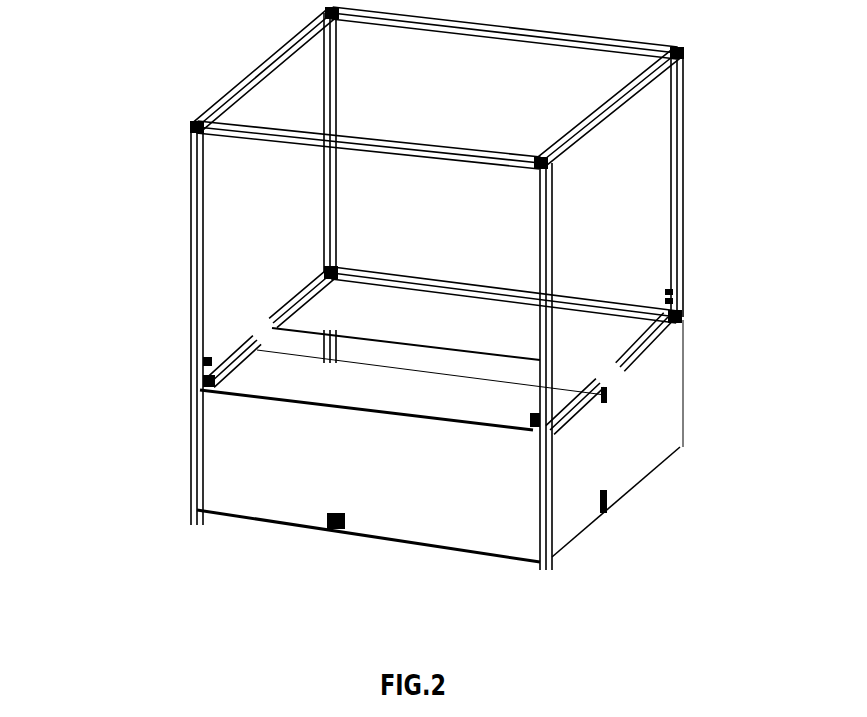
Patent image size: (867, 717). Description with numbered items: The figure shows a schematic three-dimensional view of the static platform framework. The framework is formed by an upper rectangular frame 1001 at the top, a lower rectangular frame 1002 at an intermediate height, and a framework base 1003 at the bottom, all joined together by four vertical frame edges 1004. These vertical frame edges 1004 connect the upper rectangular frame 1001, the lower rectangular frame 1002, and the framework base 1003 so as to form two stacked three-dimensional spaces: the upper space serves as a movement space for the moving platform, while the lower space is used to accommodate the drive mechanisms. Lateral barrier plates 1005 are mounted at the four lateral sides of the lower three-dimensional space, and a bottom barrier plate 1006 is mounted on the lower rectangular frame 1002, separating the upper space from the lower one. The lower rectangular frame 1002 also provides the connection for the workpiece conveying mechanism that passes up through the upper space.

The upper rectangular frame 1001 is at (277, 53).
The lower rectangular frame 1002 is at (452, 275).
The vertical frame edges 1004 is at (193, 248).
The bottom barrier plate 1006 is at (355, 383).
The framework base 1003 is at (282, 525).
The lateral barrier plates 1005 is at (600, 453).